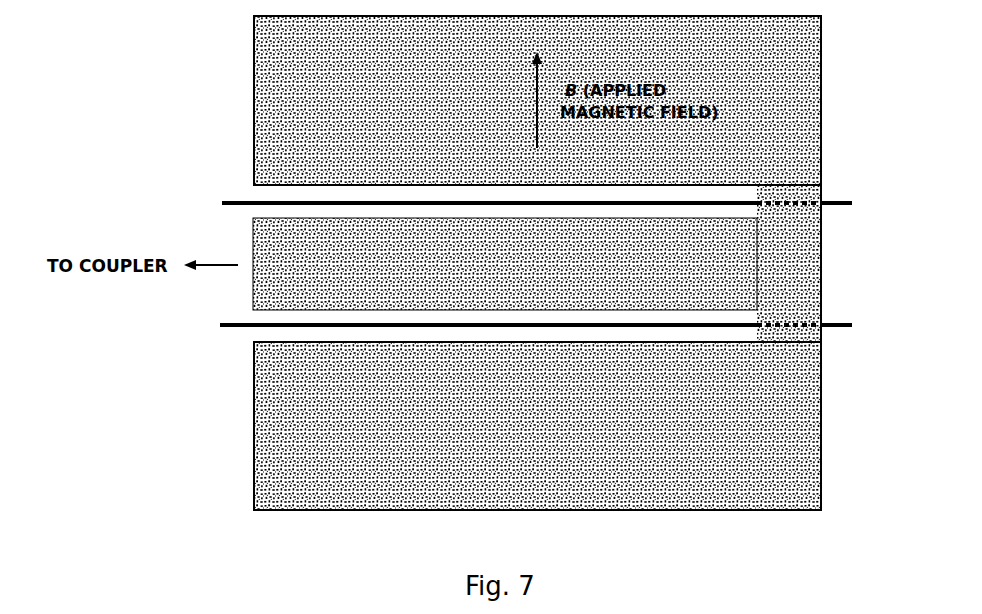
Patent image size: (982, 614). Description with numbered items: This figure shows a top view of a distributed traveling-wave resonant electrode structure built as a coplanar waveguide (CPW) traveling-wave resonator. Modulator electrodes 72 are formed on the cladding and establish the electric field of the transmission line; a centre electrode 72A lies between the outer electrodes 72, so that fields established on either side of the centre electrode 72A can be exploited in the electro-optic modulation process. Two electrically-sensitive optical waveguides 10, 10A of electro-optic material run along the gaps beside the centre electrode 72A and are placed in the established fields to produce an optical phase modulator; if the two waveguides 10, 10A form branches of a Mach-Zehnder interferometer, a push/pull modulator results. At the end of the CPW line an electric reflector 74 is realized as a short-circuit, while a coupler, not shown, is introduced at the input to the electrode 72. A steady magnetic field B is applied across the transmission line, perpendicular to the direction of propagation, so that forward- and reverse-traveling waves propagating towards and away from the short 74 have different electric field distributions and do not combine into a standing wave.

The modulator electrodes 72 is at (298, 108).
The centre electrode 72A is at (516, 278).
The optical waveguide 10 is at (222, 203).
The second optical waveguide 10A is at (220, 325).
The electric reflector 74 is at (796, 272).